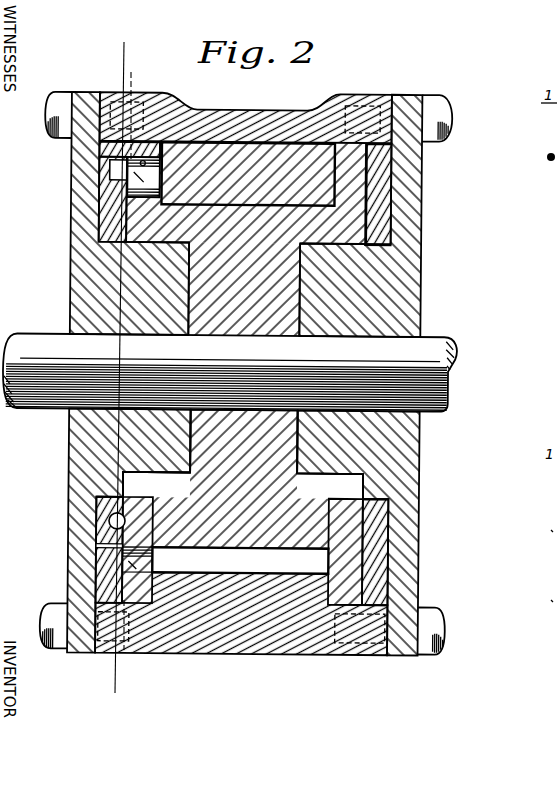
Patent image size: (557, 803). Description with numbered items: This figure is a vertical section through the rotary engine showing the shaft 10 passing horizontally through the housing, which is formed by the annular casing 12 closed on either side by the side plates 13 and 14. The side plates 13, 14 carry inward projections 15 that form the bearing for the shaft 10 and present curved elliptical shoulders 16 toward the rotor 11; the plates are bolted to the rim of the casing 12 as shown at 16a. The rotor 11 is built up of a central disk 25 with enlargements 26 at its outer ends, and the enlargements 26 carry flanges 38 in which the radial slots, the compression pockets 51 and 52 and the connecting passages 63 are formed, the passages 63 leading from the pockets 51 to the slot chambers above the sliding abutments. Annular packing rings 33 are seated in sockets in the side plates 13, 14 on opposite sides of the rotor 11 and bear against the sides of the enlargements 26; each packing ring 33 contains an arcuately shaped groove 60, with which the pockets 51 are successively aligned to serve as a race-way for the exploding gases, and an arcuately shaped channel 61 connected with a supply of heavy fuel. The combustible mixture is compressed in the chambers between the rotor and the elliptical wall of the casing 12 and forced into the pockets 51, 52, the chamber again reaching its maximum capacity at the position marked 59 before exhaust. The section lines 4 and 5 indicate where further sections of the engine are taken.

The section line 4- 4 is at (145, 72).
The section line 5- 5 is at (113, 707).
The shaft 10 is at (422, 357).
The rotor 11 is at (167, 430).
The annular casing 12 is at (252, 116).
The side plate 13 is at (64, 420).
The side plate 14 is at (426, 442).
The inward projection 15 is at (348, 443).
The elliptical shoulder 16 is at (134, 480).
The bolt 16a is at (444, 624).
The central disk 25 is at (283, 284).
The enlargement 26 is at (352, 225).
The packing ring 33 is at (107, 230).
The flange 38 is at (95, 573).
The compression pocket 51 is at (110, 167).
The compression pocket 52 is at (97, 547).
The chamber at maximum capacity 59 is at (272, 150).
The arcuately shaped groove 60 is at (80, 182).
The arcuately shaped channel 61 is at (112, 518).
The passage 63 is at (100, 152).